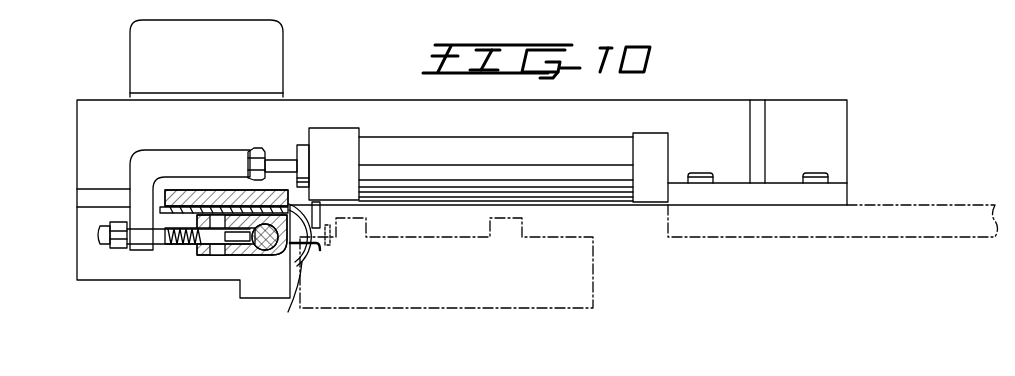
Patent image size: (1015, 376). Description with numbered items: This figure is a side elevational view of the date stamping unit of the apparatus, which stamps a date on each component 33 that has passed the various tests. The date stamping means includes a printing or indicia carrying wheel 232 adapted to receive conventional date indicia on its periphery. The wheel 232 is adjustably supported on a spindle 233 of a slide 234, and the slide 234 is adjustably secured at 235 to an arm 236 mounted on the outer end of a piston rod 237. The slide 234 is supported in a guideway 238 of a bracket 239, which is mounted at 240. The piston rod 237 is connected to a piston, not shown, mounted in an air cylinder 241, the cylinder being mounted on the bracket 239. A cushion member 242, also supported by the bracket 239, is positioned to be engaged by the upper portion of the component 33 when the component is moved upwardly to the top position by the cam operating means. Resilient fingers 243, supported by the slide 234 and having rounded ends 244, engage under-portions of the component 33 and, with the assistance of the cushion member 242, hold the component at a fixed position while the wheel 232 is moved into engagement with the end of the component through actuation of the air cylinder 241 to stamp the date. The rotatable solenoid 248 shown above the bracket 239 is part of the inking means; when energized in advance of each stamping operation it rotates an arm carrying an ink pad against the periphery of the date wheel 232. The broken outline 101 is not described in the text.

The rotatable solenoid 248 is at (285, 62).
The bracket 239 is at (77, 122).
The arm 236 is at (130, 168).
The guideway 238 is at (160, 204).
The piston rod 237 is at (275, 150).
The air cylinder 241 is at (500, 137).
The mounting of the bracket 240 is at (700, 173).
The cushion member 242 is at (322, 208).
The resilient fingers 243 is at (310, 258).
The rounded ends 244 is at (320, 252).
The printing or indicia carrying wheel 232 is at (298, 290).
The spindle 233 is at (288, 256).
The slide 234 is at (222, 255).
The adjustable securing point 235 is at (116, 249).
The component 33 is at (332, 246).
The workpiece 101 is at (595, 274).